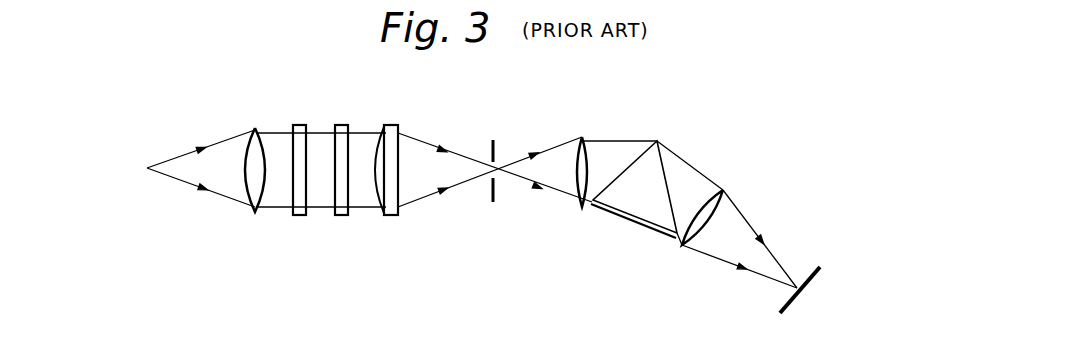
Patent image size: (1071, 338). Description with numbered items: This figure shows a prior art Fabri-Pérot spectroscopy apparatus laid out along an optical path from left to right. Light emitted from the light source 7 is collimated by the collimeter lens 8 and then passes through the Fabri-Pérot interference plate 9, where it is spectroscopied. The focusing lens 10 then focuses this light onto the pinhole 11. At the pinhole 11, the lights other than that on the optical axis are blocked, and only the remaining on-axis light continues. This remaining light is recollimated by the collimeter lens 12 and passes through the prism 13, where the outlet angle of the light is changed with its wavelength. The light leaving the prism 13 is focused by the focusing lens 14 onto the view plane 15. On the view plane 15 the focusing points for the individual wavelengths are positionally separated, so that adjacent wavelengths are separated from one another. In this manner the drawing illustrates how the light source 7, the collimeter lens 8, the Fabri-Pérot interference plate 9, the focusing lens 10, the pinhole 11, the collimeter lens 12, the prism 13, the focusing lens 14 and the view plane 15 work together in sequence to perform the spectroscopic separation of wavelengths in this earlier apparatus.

The light source 7 is at (147, 168).
The collimeter lens 8 is at (255, 128).
The Fabri-Pérot interference plate 9 is at (302, 125).
The focusing lens 10 is at (395, 217).
The pinhole 11 is at (497, 150).
The collimeter lens 12 is at (573, 187).
The prism 13 is at (653, 183).
The focusing lens 14 is at (725, 190).
The view plane 15 is at (807, 268).